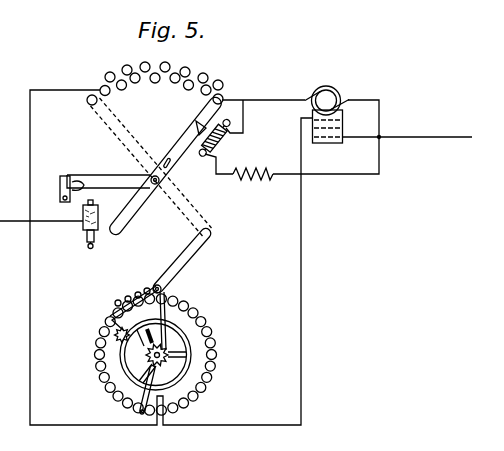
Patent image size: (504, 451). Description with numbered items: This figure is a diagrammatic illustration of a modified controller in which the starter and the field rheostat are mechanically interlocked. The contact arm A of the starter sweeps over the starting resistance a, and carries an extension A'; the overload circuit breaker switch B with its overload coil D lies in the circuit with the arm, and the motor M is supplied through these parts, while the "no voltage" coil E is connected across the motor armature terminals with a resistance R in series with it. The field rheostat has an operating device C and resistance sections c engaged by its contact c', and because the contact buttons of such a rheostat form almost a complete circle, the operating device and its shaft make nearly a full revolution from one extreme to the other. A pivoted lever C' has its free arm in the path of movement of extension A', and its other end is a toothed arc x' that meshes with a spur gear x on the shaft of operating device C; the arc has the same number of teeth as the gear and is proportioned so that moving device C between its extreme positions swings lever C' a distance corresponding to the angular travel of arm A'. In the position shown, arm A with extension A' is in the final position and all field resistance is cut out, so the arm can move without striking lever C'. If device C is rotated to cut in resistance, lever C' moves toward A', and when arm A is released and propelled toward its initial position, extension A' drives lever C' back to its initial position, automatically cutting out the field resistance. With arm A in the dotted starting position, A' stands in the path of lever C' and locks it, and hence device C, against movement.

The resistance a is at (120, 86).
The contact arm of the starter A is at (165, 166).
The extension on arm A A' is at (151, 169).
The overload circuit breaker switch B is at (97, 178).
The overload coil D is at (99, 211).
The "no voltage" coil E is at (216, 143).
The motor M is at (327, 105).
The resistance in series with the no voltage coil R is at (253, 181).
The operating device of the field rheostat C is at (162, 354).
The pivoted lever C' is at (182, 288).
The resistance sections of the field rheostat c is at (159, 354).
The spur gear x is at (159, 361).
The toothed arc x' is at (130, 320).
The contact of the field rheostat c' is at (142, 389).